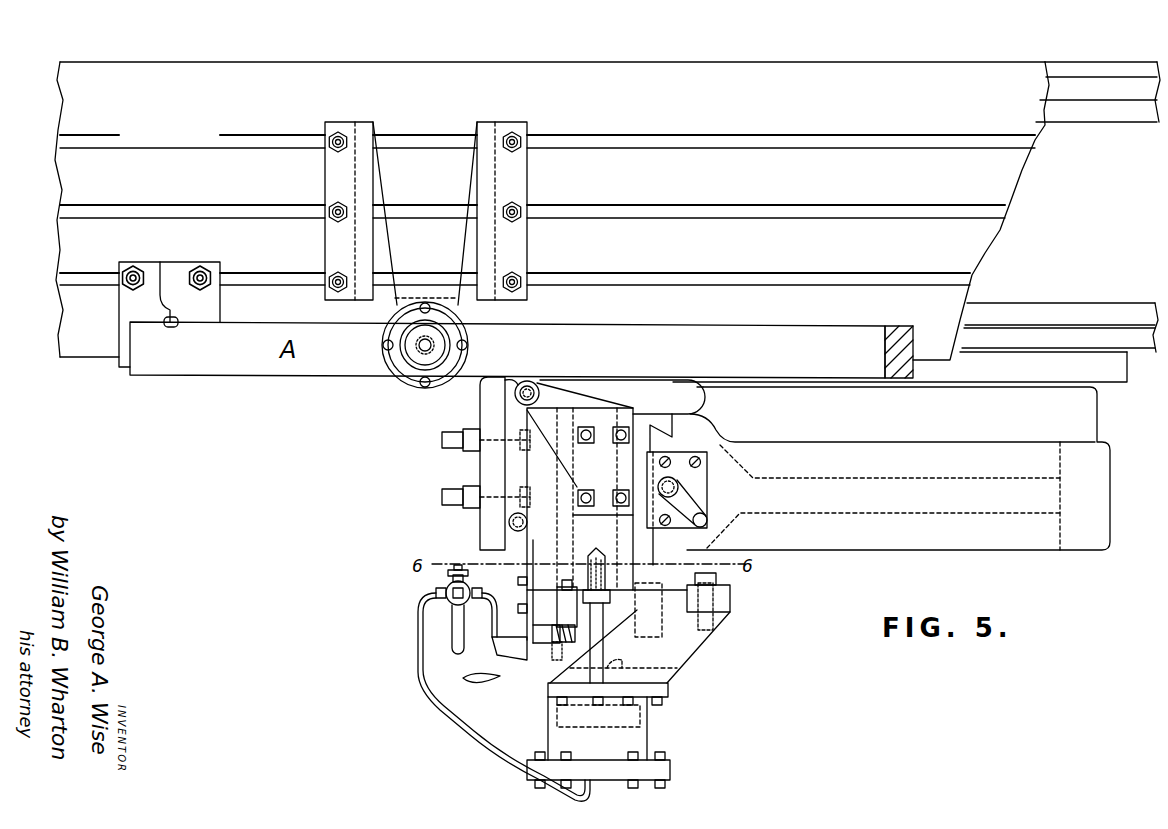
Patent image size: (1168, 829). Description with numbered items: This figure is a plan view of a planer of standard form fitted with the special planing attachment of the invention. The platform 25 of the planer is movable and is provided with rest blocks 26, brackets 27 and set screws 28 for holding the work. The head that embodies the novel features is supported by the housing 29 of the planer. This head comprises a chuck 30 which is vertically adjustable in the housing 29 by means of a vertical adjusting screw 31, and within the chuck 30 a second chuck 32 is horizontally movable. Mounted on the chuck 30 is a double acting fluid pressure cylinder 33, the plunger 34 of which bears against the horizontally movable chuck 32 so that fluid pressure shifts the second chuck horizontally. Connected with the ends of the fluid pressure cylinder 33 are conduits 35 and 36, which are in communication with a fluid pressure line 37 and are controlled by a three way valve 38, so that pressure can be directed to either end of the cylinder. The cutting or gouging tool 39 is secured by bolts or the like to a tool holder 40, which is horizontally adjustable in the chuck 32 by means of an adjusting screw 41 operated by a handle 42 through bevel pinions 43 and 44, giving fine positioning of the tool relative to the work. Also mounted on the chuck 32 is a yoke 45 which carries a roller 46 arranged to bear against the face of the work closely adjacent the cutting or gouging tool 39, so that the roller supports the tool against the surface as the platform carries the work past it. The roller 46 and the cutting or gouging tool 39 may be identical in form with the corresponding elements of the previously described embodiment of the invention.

The platform 25 is at (604, 218).
The rest blocks 26 is at (162, 331).
The brackets 27 is at (440, 170).
The set screws 28 is at (418, 357).
The housing 29 is at (898, 484).
The chuck 30 is at (660, 628).
The vertical adjusting screw 31 is at (691, 489).
The second chuck 32 is at (596, 559).
The double acting fluid pressure cylinder 33 is at (610, 735).
The plunger 34 is at (605, 636).
The conduit 35 is at (504, 697).
The conduit 36 is at (531, 617).
The fluid pressure line 37 is at (455, 566).
The three way valve 38 is at (433, 614).
The cutting or gouging tool 39 is at (474, 463).
The tool holder 40 is at (481, 468).
The adjusting screw 41 is at (560, 592).
The handle 42 is at (495, 652).
The bevel pinion 43 is at (546, 665).
The bevel pinion 44 is at (551, 667).
The yoke 45 is at (616, 485).
The roller 46 is at (492, 393).